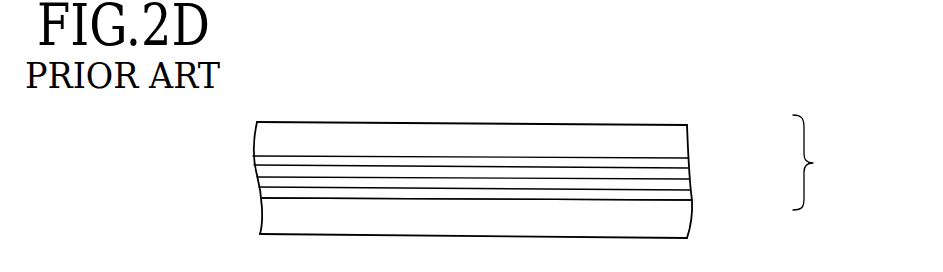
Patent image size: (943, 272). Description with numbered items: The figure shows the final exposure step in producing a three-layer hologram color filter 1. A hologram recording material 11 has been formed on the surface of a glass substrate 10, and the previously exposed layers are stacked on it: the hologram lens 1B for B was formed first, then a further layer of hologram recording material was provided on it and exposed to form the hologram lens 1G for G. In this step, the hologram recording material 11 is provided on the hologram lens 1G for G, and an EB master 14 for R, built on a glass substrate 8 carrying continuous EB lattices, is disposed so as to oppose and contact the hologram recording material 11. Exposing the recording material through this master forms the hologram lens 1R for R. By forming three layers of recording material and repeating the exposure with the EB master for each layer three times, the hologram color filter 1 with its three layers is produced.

The glass substrate 8 is at (460, 123).
The EB master for R 14 is at (255, 162).
The hologram recording material 11 is at (255, 172).
The hologram lens for R 1R is at (687, 174).
The hologram lens for G 1G is at (680, 186).
The hologram lens for B 1B is at (680, 197).
The hologram color filter 1 is at (813, 162).
The glass substrate 10 is at (675, 220).